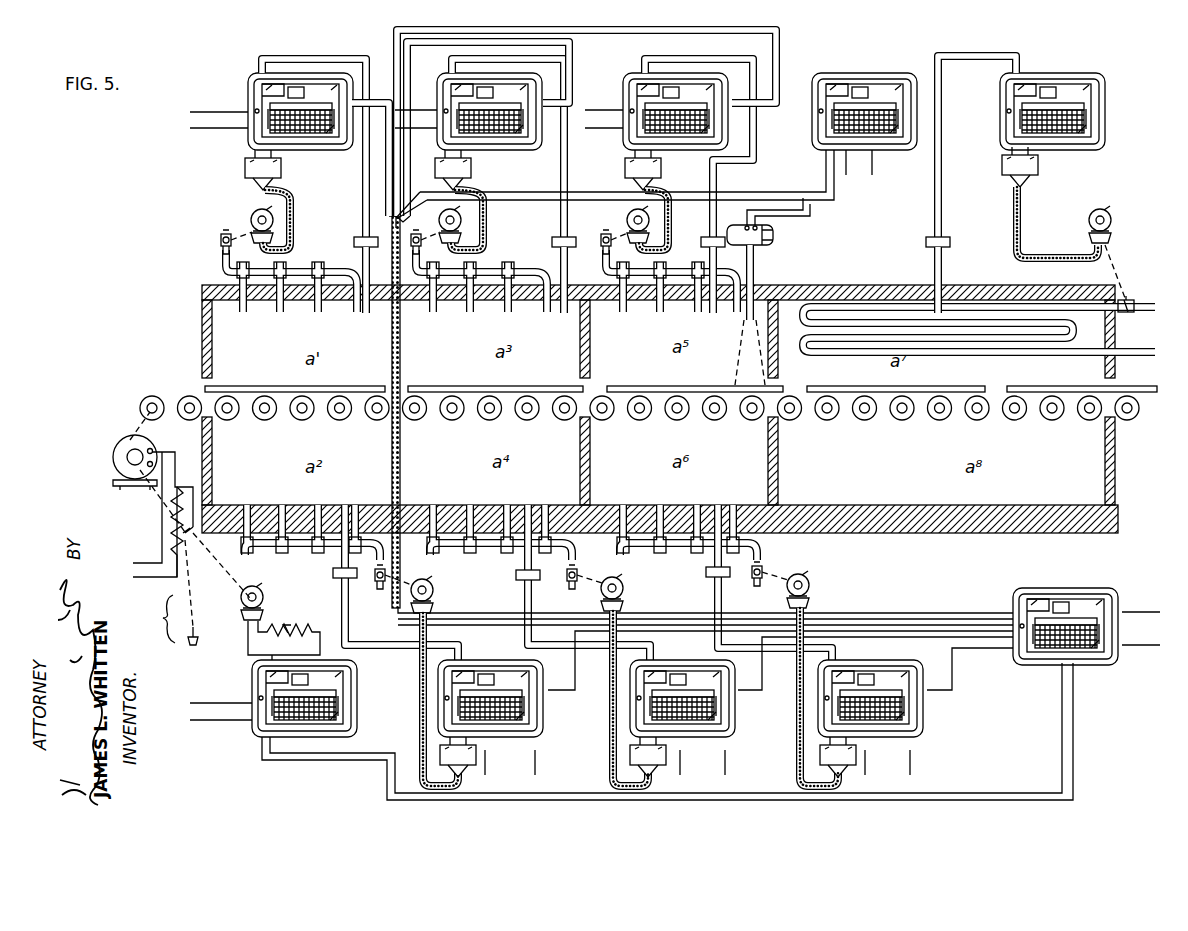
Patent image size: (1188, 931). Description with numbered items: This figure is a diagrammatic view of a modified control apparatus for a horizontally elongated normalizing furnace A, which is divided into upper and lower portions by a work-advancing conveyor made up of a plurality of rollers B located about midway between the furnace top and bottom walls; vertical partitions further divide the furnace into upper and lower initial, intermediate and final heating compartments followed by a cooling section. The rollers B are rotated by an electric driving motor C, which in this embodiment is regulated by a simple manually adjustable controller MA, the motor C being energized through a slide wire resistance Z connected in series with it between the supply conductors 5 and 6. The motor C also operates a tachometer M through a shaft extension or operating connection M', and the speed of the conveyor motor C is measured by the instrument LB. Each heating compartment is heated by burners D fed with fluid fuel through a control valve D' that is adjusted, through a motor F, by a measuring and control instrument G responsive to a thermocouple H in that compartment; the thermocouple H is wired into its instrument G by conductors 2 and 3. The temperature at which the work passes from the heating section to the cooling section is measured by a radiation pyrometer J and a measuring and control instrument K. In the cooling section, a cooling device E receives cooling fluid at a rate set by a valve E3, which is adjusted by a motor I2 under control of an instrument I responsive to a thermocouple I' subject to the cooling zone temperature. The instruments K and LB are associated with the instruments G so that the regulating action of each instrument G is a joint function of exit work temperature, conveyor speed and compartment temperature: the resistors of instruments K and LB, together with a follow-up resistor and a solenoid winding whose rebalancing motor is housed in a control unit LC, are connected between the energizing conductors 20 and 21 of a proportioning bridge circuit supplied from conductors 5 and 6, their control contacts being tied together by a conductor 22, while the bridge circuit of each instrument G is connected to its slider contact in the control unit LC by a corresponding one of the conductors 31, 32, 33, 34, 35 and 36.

The conductor 2 is at (366, 55).
The conductor 3 is at (362, 188).
The electric supply conductor 5 is at (228, 112).
The electric supply conductor 6 is at (228, 128).
The energizing conductor 20 is at (838, 192).
The energizing conductor 21 is at (834, 205).
The conductor 22 is at (817, 195).
The conductor 31 is at (955, 683).
The conductor 32 is at (947, 636).
The conductor 33 is at (915, 630).
The conductor 34 is at (380, 103).
The conductor 35 is at (432, 50).
The conductor 36 is at (395, 52).
The normalizing furnace A is at (202, 290).
The conveyor rollers B is at (340, 418).
The electric driving motor C is at (122, 445).
The burners D is at (491, 405).
The control valve D' is at (488, 399).
The cooling device E is at (995, 330).
The valve E3 is at (1128, 312).
The motor F is at (258, 212).
The measuring and control instrument G is at (262, 95).
The thermocouple H is at (368, 312).
The instrument I is at (1052, 114).
The thermocouple I' is at (971, 184).
The motor I2 is at (1090, 212).
The radiation pyrometer J is at (775, 238).
The measuring and control instrument K is at (862, 98).
The instrument LB is at (255, 675).
The control unit LC is at (1068, 602).
The tachometer M is at (265, 621).
The operating connection M' is at (221, 565).
The manually adjustable controller MA is at (164, 592).
The slide wire resistance Z is at (187, 557).